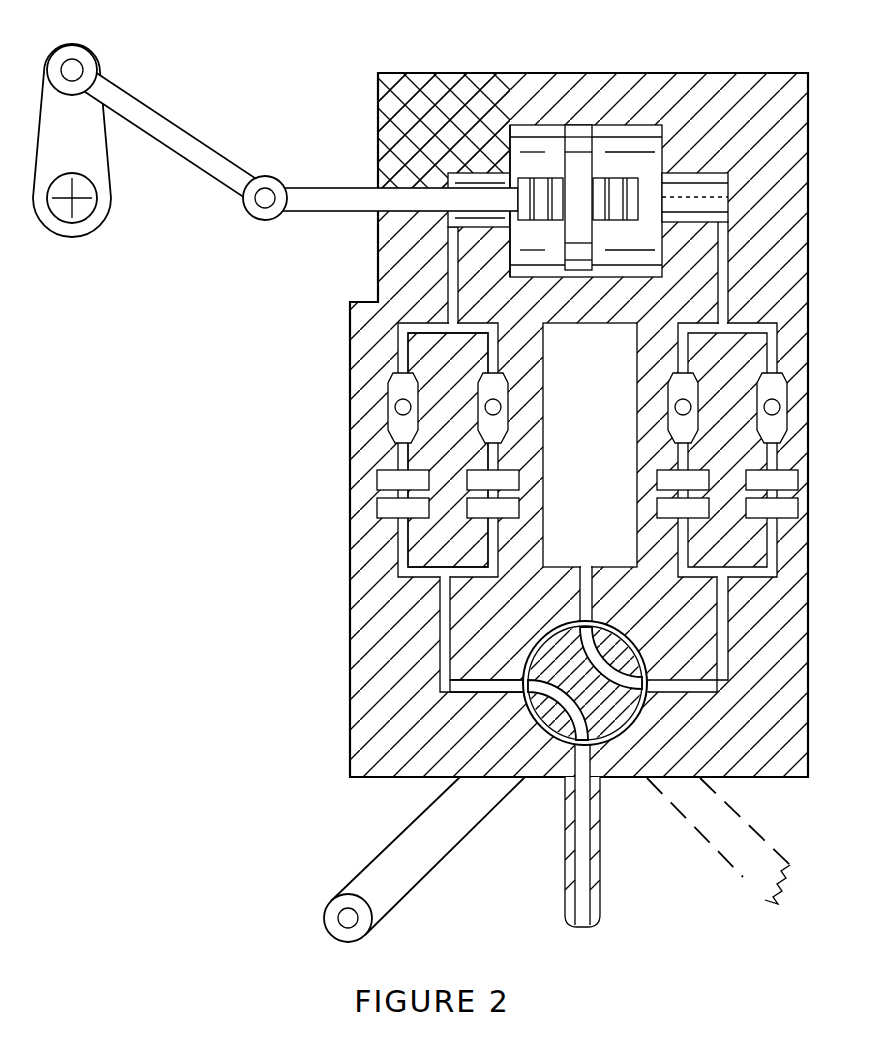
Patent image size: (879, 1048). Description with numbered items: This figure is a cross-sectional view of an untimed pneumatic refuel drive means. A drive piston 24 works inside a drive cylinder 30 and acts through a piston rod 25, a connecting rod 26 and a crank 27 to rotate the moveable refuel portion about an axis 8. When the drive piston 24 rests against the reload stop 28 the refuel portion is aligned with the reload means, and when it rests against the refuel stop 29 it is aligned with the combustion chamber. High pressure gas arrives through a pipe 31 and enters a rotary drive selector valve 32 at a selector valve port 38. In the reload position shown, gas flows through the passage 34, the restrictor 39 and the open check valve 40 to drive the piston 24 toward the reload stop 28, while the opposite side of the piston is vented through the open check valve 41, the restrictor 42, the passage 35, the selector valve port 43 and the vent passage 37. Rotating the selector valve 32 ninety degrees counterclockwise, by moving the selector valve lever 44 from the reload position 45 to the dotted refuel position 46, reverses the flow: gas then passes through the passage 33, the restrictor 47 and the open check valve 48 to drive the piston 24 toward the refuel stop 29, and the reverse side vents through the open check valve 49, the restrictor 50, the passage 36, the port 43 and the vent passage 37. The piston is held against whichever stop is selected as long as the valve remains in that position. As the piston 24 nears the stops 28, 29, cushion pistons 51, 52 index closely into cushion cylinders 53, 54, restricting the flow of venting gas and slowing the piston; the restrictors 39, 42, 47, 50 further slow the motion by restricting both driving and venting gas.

The axis 8 is at (74, 199).
The drive piston 24 is at (577, 150).
The piston rod 25 is at (300, 172).
The connecting rod 26 is at (150, 100).
The crank 27 is at (73, 120).
The reload stop 28 is at (690, 173).
The refuel stop 29 is at (538, 180).
The drive cylinder 30 is at (538, 122).
The pipe 31 is at (597, 895).
The drive selector valve 32 is at (553, 667).
The restrictor and check valve passage 33 is at (700, 580).
The restrictor and check valve passage 34 is at (445, 598).
The restrictor and check valve passage 35 is at (625, 546).
The restrictor and check valve passage 36 is at (487, 540).
The vent passage 37 is at (583, 610).
The selector valve port 38 is at (583, 734).
The restrictor 39 is at (403, 543).
The check valve 40 is at (490, 393).
The check valve 41 is at (680, 380).
The restrictor 42 is at (677, 492).
The selector valve port 43 is at (598, 745).
The selector valve lever 44 is at (432, 838).
The reload position 45 is at (342, 916).
The refuel position 46 is at (743, 877).
The restrictor 47 is at (767, 492).
The check valve 48 is at (767, 393).
The check valve 49 is at (397, 392).
The restrictor 50 is at (420, 507).
The cushion piston 51 is at (510, 147).
The cushion piston 52 is at (640, 183).
The cushion cylinder 53 is at (467, 173).
The cushion cylinder 54 is at (690, 178).